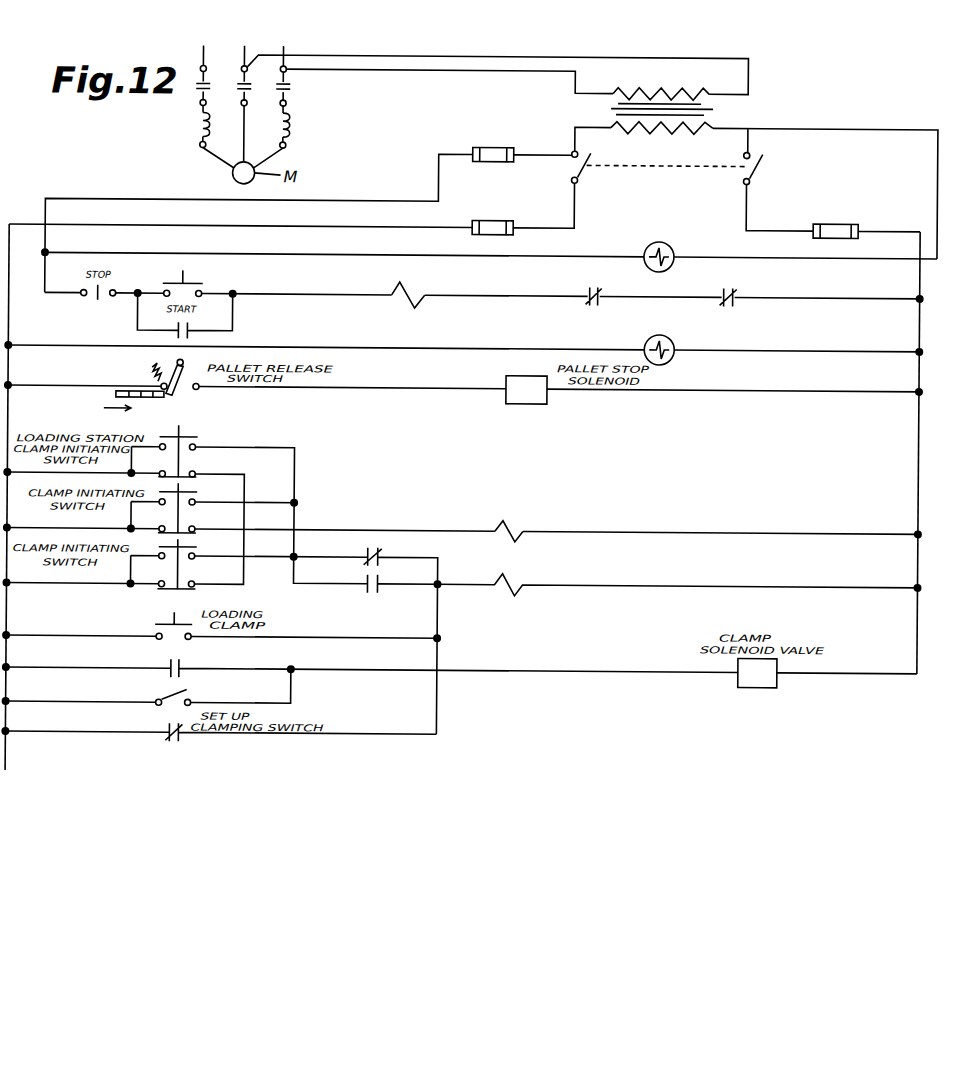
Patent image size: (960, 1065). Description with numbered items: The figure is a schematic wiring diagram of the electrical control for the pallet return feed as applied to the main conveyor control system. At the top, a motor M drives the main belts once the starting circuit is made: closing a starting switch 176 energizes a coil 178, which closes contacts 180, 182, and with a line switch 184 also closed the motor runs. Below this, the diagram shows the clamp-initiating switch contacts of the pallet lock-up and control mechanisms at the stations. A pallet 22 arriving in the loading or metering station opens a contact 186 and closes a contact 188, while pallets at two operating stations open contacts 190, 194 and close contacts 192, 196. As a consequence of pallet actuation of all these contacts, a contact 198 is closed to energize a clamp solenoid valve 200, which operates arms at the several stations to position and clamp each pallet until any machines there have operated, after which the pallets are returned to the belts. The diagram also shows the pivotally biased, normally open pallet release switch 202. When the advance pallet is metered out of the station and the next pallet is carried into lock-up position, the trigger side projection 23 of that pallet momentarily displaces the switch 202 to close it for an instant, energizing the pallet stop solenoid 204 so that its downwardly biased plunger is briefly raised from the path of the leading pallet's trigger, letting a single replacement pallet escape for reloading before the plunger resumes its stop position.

The contact 182 is at (197, 87).
The line switch 184 is at (662, 163).
The starting switch 176 is at (187, 276).
The coil 178 is at (403, 290).
The contact 180 is at (191, 329).
The pivotally biased switch 202 is at (184, 366).
The side projection 23 is at (117, 396).
The pallet 22 is at (153, 395).
The solenoid 204 is at (529, 401).
The contact 188 is at (185, 434).
The contact 186 is at (183, 474).
The contact 192 is at (190, 490).
The contact 190 is at (183, 533).
The contact 196 is at (182, 548).
The contact 194 is at (183, 589).
The contact 198 is at (185, 659).
The clamp solenoid valve 200 is at (755, 683).